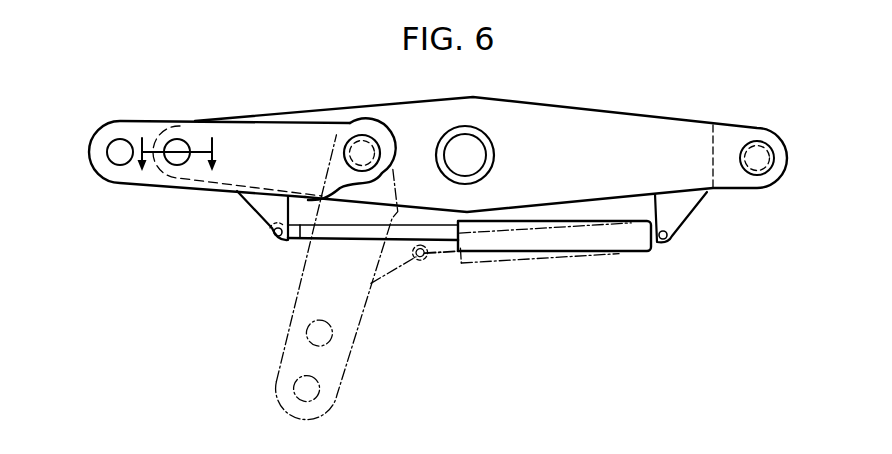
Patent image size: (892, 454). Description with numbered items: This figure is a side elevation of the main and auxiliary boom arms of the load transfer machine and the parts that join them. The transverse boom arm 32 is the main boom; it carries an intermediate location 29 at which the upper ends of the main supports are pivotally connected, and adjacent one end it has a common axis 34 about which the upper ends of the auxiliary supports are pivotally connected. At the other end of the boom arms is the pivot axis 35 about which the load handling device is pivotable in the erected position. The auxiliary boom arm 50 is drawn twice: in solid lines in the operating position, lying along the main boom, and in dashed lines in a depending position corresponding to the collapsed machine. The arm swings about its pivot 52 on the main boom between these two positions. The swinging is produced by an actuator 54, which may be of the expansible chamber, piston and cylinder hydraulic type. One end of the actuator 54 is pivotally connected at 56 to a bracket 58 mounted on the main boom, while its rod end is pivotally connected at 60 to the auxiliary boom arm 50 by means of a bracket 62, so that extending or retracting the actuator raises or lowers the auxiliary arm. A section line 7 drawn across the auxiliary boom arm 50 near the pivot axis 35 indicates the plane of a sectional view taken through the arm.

The section line 7 is at (178, 146).
The intermediate location 29 is at (466, 155).
The transverse boom arm 32 is at (577, 125).
The common axis 34 is at (758, 157).
The pivot axis 35 is at (113, 148).
The auxiliary boom arm 50 is at (267, 133).
The arm pivot 52 is at (363, 152).
The actuator 54 is at (617, 241).
The pivotal connection 56 is at (670, 241).
The bracket 58 is at (683, 205).
The pivotal connection 60 is at (276, 237).
The bracket 62 is at (258, 207).